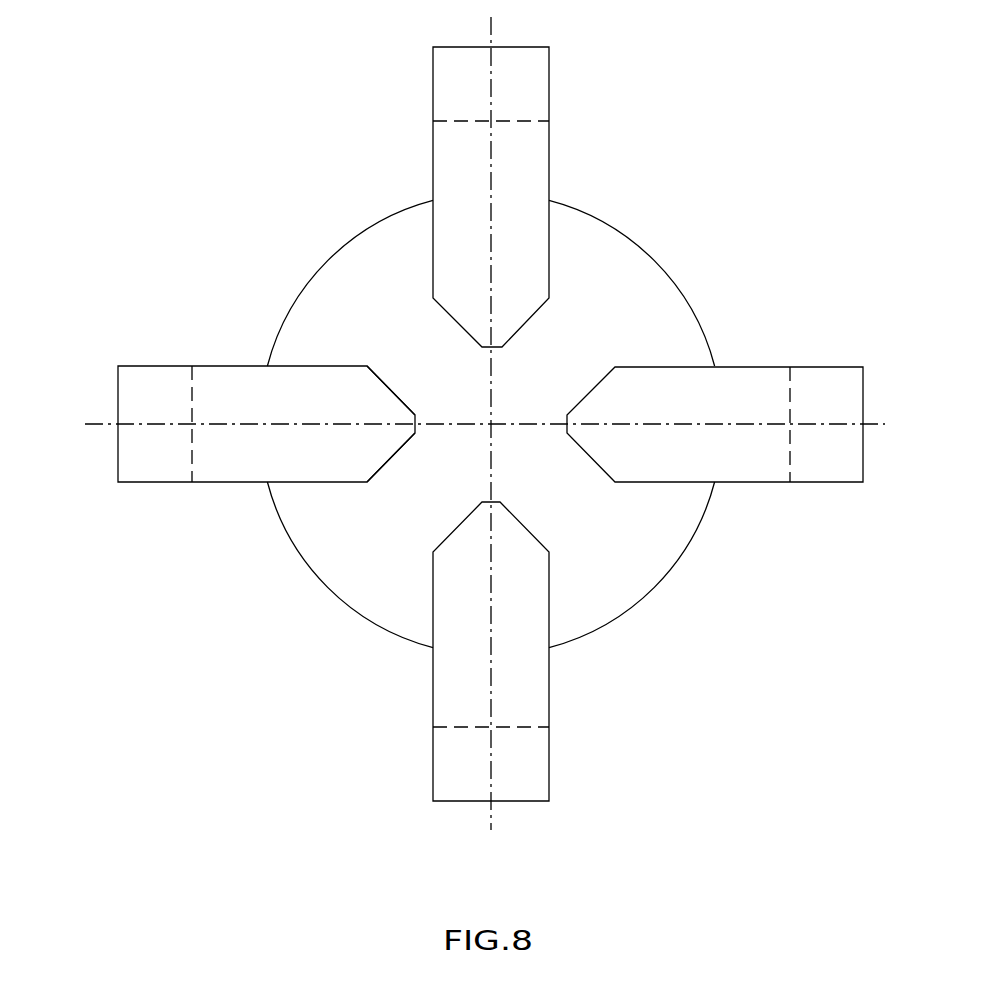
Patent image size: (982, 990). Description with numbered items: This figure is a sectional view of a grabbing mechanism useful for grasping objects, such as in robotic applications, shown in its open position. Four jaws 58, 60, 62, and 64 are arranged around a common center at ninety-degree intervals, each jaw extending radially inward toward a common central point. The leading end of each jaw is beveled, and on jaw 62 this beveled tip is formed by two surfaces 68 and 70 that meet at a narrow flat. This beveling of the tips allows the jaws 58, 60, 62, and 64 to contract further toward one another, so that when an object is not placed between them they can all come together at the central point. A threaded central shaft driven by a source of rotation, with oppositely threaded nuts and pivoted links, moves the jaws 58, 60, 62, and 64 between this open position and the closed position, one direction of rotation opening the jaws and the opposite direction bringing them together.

The jaw 58 is at (549, 145).
The jaw 60 is at (549, 691).
The jaw 62 is at (163, 366).
The jaw 64 is at (777, 367).
The beveled tip surface 68 is at (320, 275).
The beveled tip surface 70 is at (397, 455).